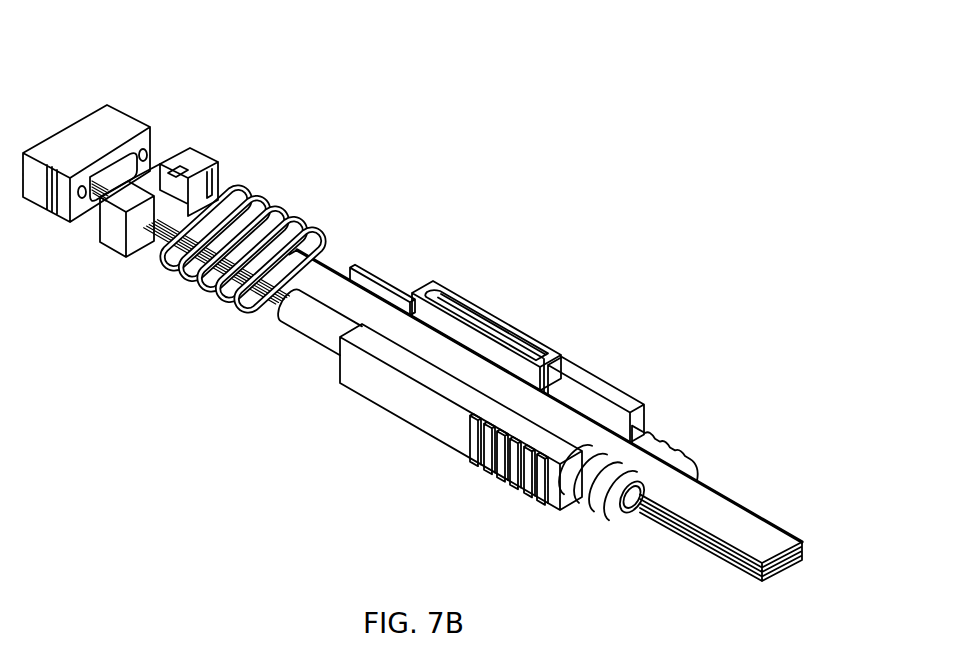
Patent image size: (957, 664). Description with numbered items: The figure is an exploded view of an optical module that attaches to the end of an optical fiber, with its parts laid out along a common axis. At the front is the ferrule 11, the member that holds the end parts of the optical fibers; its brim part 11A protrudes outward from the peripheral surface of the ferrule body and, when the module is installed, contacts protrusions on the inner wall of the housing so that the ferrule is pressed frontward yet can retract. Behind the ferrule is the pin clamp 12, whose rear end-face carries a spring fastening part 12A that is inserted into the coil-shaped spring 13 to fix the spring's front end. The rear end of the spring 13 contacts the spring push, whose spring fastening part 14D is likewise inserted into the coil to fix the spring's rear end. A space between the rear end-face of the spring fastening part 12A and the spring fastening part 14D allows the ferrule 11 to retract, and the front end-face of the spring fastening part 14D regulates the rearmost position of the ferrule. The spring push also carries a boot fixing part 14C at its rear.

The ferrule 11 is at (94, 122).
The brim part 11A is at (134, 118).
The pin clamp 12 is at (183, 192).
The spring fastening part 12A is at (220, 162).
The spring 13 is at (270, 192).
The boot fixing part 14C is at (668, 440).
The spring fastening part 14D is at (380, 272).